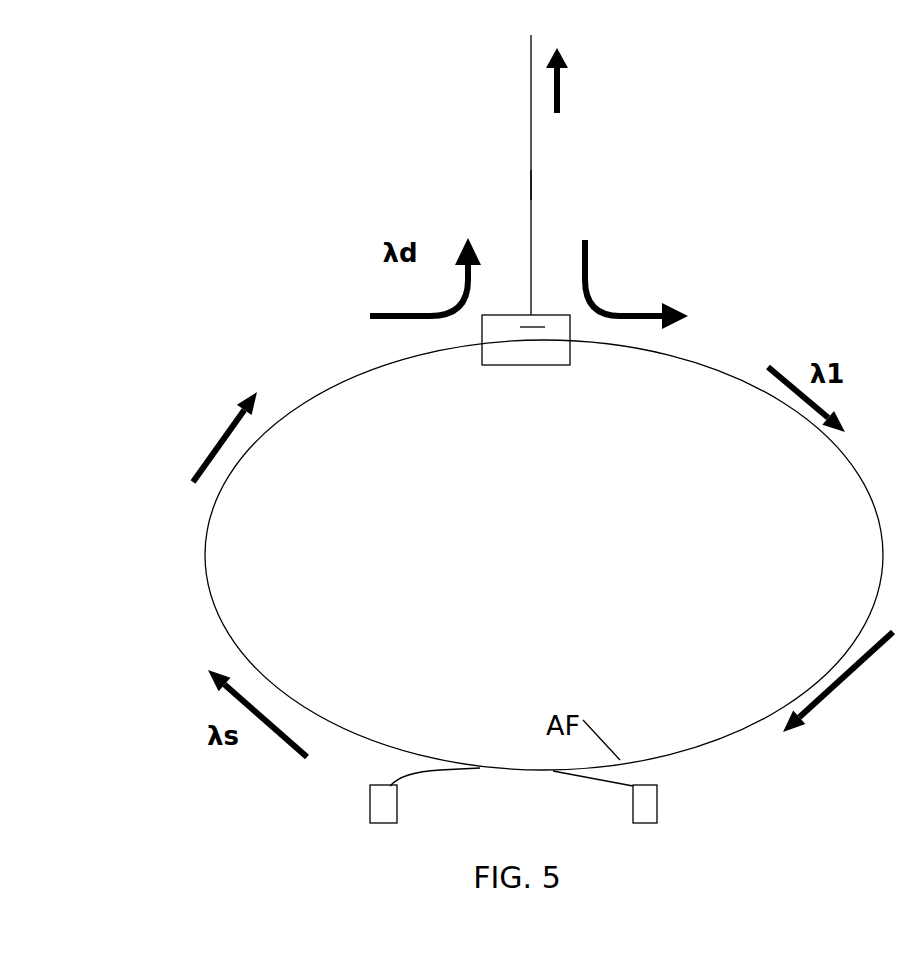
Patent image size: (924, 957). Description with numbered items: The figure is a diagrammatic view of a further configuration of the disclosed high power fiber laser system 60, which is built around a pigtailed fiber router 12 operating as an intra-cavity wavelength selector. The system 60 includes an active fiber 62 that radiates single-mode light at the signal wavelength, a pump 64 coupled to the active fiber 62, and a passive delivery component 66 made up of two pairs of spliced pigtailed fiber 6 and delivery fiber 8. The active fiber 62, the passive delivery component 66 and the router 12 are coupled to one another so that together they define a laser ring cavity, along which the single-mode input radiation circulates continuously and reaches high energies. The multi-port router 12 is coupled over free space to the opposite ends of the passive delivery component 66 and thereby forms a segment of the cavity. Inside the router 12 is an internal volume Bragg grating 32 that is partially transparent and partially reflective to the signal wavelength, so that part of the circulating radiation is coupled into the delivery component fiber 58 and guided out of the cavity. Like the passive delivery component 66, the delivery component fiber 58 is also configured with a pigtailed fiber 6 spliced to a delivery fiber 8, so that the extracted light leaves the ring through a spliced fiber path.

The pigtailed fiber 6 is at (532, 288).
The delivery fiber 8 is at (532, 127).
The pigtailed router 12 is at (514, 395).
The internal VBG 32 is at (533, 327).
The delivery component fiber 58 is at (522, 176).
The high power fiber laser system 60 is at (179, 589).
The active fiber 62 is at (433, 747).
The pump 64 is at (645, 808).
The passive delivery component 66 is at (268, 480).